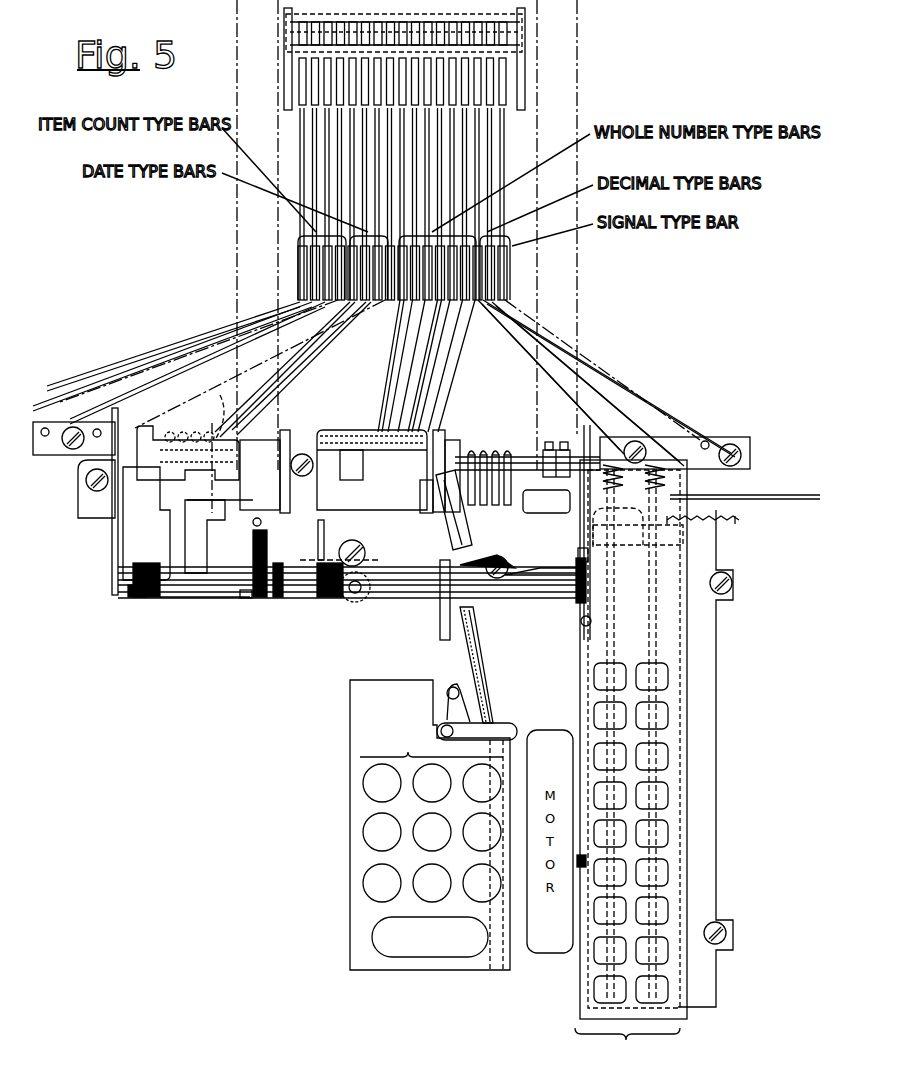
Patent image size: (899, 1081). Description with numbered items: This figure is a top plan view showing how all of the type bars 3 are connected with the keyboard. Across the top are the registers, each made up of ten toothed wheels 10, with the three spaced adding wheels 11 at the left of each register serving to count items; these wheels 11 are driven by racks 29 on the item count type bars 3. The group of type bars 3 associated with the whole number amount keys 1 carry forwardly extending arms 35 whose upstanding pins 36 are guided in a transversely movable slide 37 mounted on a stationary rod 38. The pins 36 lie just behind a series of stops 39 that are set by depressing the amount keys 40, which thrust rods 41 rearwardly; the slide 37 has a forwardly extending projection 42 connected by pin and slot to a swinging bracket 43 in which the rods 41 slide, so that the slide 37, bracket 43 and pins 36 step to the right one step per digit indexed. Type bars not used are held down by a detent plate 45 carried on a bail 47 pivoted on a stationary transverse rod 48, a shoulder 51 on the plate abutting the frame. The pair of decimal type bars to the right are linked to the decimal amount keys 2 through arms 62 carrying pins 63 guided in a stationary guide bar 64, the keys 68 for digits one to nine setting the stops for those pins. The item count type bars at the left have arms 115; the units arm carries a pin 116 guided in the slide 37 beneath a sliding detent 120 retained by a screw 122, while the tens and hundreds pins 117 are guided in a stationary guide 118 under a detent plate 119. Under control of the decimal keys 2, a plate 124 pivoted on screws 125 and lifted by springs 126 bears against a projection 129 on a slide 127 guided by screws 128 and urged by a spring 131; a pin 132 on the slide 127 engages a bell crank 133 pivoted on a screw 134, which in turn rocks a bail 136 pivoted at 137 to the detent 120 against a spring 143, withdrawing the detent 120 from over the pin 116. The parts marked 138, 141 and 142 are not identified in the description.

The whole number amount keys 1 is at (433, 825).
The decimal amount keys 2 is at (631, 759).
The type bars 3 is at (310, 268).
The toothed wheels 10 is at (473, 18).
The adding wheels 11 is at (361, 16).
The racks 29 is at (370, 78).
The forwardly extending arms 35 is at (411, 376).
The upstanding pins 36 is at (432, 418).
The transversely movable slide 37 is at (448, 442).
The stationary rod 38 is at (506, 454).
The stops 39 is at (489, 466).
The amount keys 40 is at (363, 880).
The rods 41 is at (477, 682).
The forwardly extending projection 42 is at (442, 519).
The swinging bracket 43 is at (480, 660).
The detent plate 45 is at (426, 513).
The bail 47 is at (570, 602).
The stationary transverse rod 48 is at (526, 598).
The shoulder 51 is at (340, 532).
The forwardly extending arms 62 is at (573, 393).
The upstanding pins 63 is at (642, 440).
The stationary guide bar 64 is at (728, 443).
The keys 68 is at (620, 815).
The forwardly extending arms 115 is at (306, 339).
The upstanding pin 116 is at (338, 430).
The upstanding pins 117 is at (207, 448).
The stationary guide 118 is at (150, 429).
The detent plate 119 is at (169, 491).
The detent 120 is at (302, 432).
The screw 122 is at (271, 519).
The plate 124 is at (718, 683).
The screws 125 is at (732, 588).
The springs 126 is at (580, 622).
The slide 127 is at (522, 568).
The screws 128 is at (499, 565).
The upstanding projection 129 is at (582, 552).
The spring 131 is at (735, 521).
The pin 132 is at (360, 602).
The bell crank 133 is at (330, 598).
The screw 134 is at (352, 548).
The bail 136 is at (285, 600).
The pivot 137 is at (256, 598).
The shaft 138 is at (212, 598).
The collar 141 is at (153, 598).
The collar 142 is at (155, 563).
The spring 143 is at (252, 540).